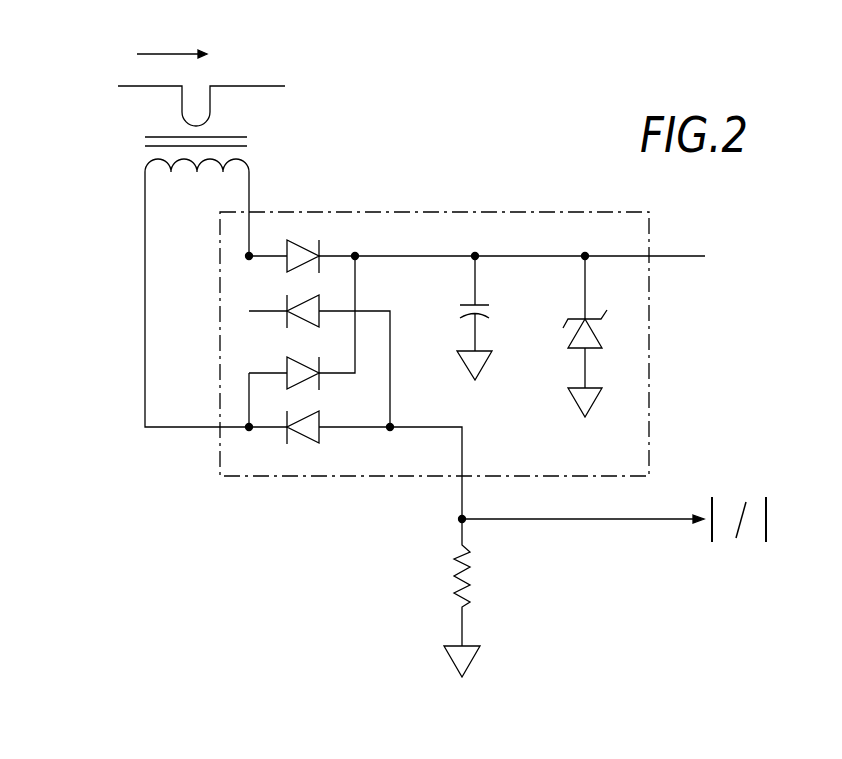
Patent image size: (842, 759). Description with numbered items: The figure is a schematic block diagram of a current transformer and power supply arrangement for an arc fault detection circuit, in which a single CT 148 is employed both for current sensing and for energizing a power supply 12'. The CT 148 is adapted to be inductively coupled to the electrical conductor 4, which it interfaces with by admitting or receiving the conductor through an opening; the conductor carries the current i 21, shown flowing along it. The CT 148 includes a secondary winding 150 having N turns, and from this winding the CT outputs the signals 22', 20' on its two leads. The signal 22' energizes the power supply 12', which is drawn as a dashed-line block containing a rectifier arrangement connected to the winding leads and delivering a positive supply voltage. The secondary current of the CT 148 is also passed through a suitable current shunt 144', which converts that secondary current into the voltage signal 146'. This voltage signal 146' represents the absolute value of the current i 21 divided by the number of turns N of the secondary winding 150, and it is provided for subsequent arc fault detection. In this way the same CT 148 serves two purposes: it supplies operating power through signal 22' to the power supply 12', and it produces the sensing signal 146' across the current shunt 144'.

The current i 21 is at (152, 53).
The electrical conductor 4 is at (270, 86).
The current transformer (CT) 148 is at (102, 124).
The secondary winding 150 is at (145, 162).
The signal 22' is at (279, 204).
The signal 20' is at (168, 313).
The power supply 12' is at (481, 365).
The current shunt 144' is at (427, 597).
The voltage signal 146' is at (614, 530).